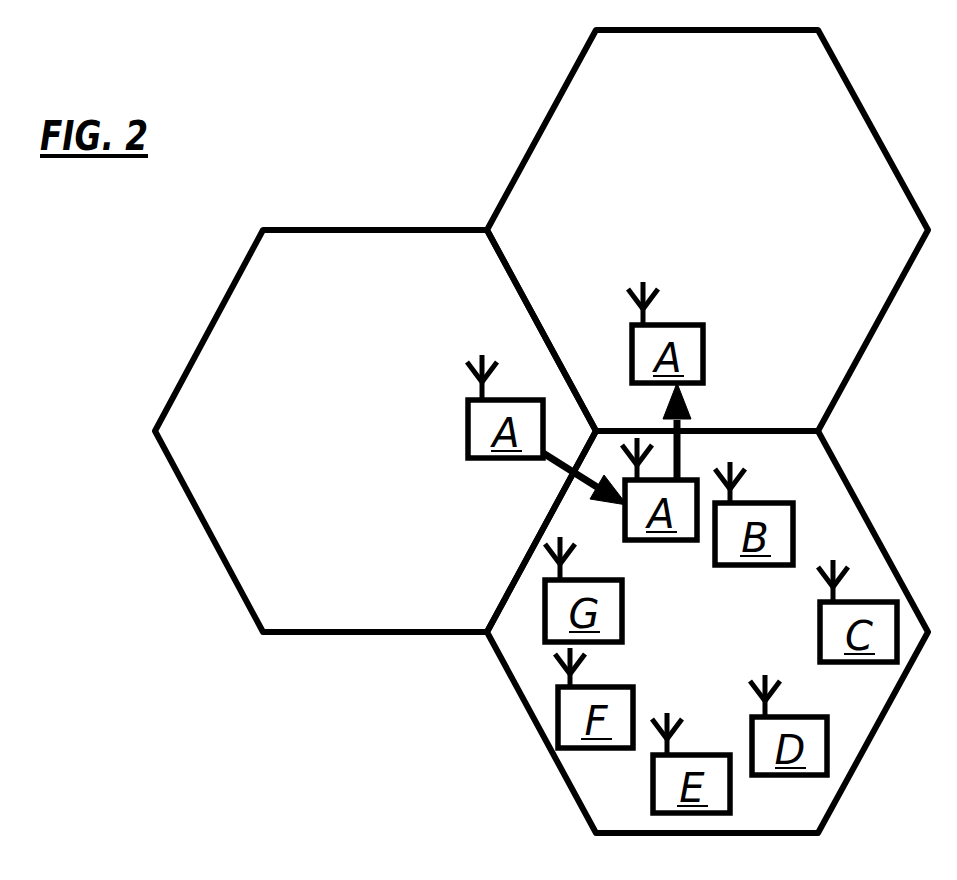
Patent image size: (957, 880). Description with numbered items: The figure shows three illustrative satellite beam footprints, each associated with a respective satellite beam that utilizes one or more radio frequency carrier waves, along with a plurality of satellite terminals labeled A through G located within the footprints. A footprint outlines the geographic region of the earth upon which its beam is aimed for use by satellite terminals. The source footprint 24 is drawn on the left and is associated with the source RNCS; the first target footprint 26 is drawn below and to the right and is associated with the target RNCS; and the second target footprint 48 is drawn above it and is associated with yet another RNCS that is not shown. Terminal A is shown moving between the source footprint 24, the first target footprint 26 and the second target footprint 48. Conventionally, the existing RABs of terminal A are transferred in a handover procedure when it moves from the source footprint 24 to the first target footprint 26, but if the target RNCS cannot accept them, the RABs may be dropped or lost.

The source footprint 24 is at (332, 227).
The second target footprint 48 is at (565, 82).
The first target footprint 26 is at (550, 758).